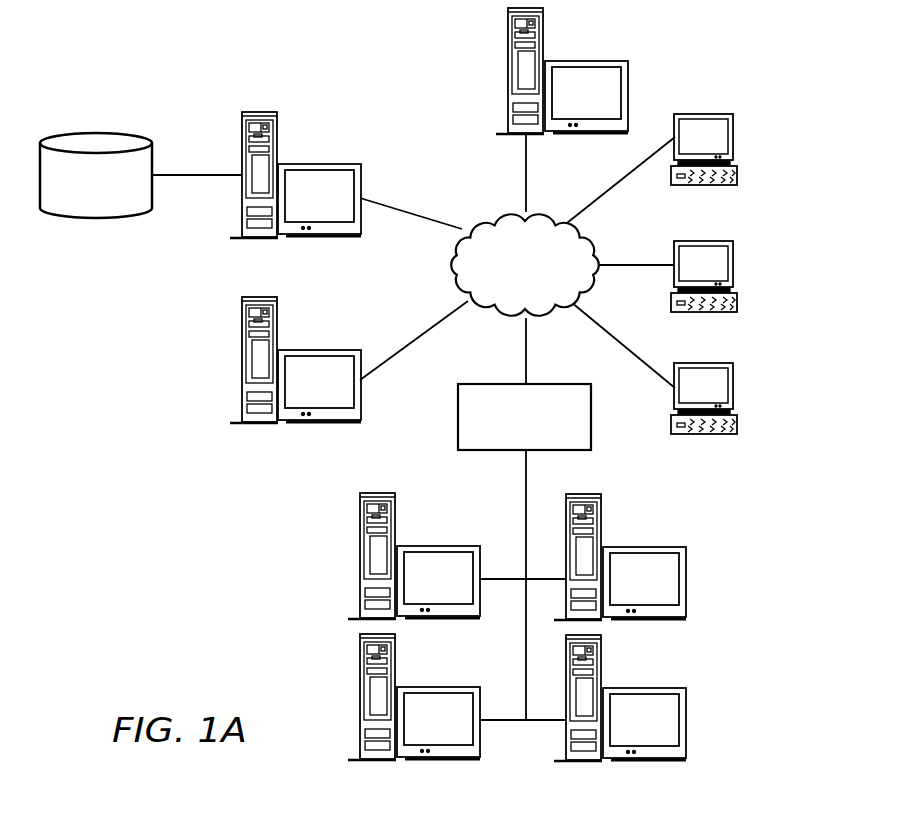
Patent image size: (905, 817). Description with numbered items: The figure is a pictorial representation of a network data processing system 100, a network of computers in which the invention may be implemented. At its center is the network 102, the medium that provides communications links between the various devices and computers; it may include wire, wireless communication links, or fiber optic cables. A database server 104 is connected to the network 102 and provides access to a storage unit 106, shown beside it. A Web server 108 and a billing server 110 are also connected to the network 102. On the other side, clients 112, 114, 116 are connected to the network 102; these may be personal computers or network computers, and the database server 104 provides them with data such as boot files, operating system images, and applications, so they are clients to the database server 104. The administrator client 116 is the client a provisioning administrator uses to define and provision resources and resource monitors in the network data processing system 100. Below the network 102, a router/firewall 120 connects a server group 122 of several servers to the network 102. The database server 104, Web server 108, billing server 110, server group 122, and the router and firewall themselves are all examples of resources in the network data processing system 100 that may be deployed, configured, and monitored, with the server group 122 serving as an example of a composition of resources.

The network data processing system 100 is at (299, 41).
The network 102 is at (497, 215).
The database server 104 is at (240, 145).
The storage unit 106 is at (95, 143).
The Web server 108 is at (240, 362).
The billing server 110 is at (508, 70).
The client 112 is at (735, 135).
The client 114 is at (733, 265).
The administrator client 116 is at (733, 390).
The router/firewall 120 is at (458, 418).
The server group 122 is at (329, 762).